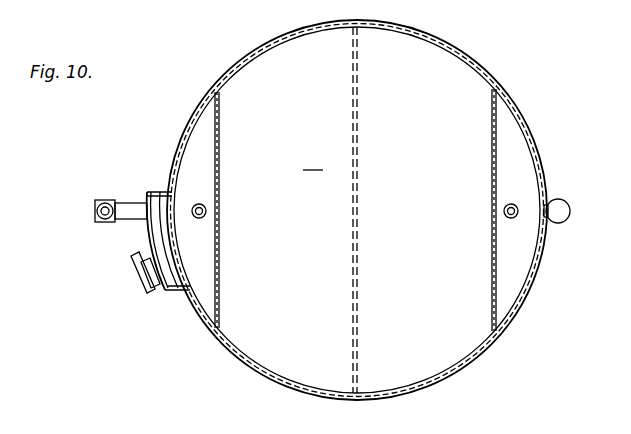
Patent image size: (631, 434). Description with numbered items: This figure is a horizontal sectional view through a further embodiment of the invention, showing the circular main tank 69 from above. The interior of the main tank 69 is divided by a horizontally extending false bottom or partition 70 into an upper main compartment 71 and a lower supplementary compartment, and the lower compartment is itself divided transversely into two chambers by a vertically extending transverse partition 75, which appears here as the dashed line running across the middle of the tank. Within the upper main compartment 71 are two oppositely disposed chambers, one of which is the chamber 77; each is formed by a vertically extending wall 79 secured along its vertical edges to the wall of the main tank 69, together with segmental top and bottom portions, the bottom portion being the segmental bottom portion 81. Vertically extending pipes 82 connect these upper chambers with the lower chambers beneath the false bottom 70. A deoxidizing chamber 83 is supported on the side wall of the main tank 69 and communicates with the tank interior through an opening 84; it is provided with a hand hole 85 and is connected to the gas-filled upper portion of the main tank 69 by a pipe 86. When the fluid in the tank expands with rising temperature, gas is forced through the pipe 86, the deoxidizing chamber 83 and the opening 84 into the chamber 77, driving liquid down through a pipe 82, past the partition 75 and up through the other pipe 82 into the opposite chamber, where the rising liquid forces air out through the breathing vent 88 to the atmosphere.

The main tank 69 is at (543, 253).
The false bottom or partition 70 is at (452, 345).
The upper main compartment 71 is at (314, 161).
The transverse partition 75 is at (357, 300).
The chamber 77 is at (208, 298).
The vertically extending wall 79 is at (218, 184).
The segmental bottom portion 81 is at (204, 153).
The vertically extending pipe 82 is at (206, 218).
The deoxidizing chamber 83 is at (153, 238).
The opening 84 is at (196, 250).
The hand hole 85 is at (140, 272).
The pipe 86 is at (125, 209).
The breathing vent 88 is at (562, 206).